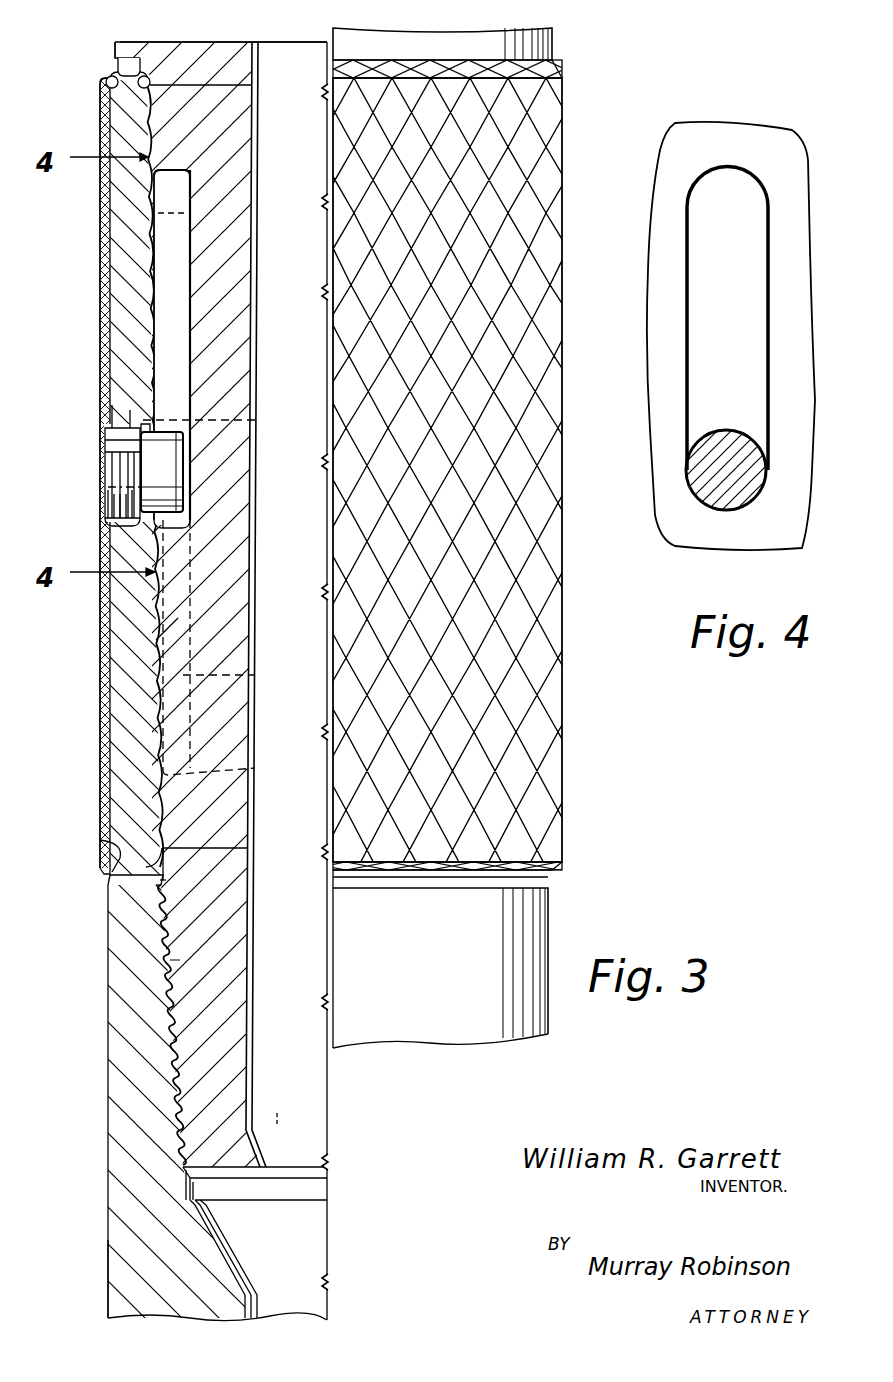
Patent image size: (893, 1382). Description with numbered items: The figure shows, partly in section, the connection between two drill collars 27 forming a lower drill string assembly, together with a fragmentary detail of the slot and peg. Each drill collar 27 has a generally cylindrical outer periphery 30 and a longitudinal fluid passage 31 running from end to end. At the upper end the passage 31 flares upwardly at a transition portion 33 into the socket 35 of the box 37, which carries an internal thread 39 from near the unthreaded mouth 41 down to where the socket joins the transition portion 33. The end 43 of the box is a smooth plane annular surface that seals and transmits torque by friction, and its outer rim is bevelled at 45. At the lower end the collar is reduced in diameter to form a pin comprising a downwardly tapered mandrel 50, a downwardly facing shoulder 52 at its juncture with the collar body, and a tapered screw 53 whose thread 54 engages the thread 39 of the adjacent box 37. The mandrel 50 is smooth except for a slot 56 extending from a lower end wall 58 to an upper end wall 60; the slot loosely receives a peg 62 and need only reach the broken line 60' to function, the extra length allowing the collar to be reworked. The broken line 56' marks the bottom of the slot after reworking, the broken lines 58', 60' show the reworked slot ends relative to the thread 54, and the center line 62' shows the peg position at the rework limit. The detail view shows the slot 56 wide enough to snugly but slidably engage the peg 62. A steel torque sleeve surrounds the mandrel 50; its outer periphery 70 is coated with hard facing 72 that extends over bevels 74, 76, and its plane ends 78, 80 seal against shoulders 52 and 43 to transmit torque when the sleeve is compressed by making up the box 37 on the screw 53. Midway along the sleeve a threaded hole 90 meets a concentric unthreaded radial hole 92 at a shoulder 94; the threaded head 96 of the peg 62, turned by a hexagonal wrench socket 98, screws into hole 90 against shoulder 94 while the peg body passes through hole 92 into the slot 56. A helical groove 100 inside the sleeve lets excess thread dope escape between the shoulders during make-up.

In FIG. 3, the drill collar 27 is at (165, 42).
In FIG. 3, the outer periphery 30 is at (115, 50).
In FIG. 3, the longitudinal fluid passage 31 is at (260, 60).
In FIG. 3, the flaring transition portion 33 is at (220, 1255).
In FIG. 3, the socket 35 is at (205, 1190).
In FIG. 3, the box 37 is at (135, 1050).
In FIG. 3, the internal thread 39 is at (165, 980).
In FIG. 3, the unthreaded mouth 41 is at (158, 905).
In FIG. 3, the end of box 43 is at (165, 885).
In FIG. 3, the bevel 45 is at (110, 880).
In FIG. 3, the mandrel 50 is at (200, 120).
In FIG. 3, the shoulder 52 is at (128, 64).
In FIG. 3, the tapered screw 53 is at (218, 1042).
In FIG. 3, the screw thread 54 is at (170, 958).
In FIG. 3, the slot 56 is at (230, 347).
In FIG. 4, the slot 56 is at (727, 319).
In FIG. 3, the broken line of slot bottom 56' is at (232, 645).
In FIG. 3, the lower end wall 58 is at (227, 528).
In FIG. 3, the broken line of lower slot end 58' is at (232, 764).
In FIG. 3, the upper end wall 60 is at (230, 162).
In FIG. 3, the broken line of upper slot end 60' is at (223, 414).
In FIG. 3, the peg 62 is at (220, 472).
In FIG. 4, the peg 62 is at (726, 445).
In FIG. 3, the center line of peg 62' is at (234, 200).
In FIG. 3, the outer periphery of sleeve 70 is at (105, 430).
In FIG. 3, the hard facing material 72 is at (100, 716).
In FIG. 3, the bevel 74 is at (110, 848).
In FIG. 3, the bevel 76 is at (100, 95).
In FIG. 3, the end of sleeve 78 is at (160, 87).
In FIG. 3, the end of sleeve 80 is at (165, 855).
In FIG. 3, the threaded hole 90 is at (110, 410).
In FIG. 3, the unthreaded radial hole 92 is at (150, 423).
In FIG. 3, the shoulder 94 is at (135, 535).
In FIG. 3, the threaded head 96 is at (115, 448).
In FIG. 3, the hexagonal wrench socket 98 is at (98, 477).
In FIG. 3, the helical groove 100 is at (162, 632).